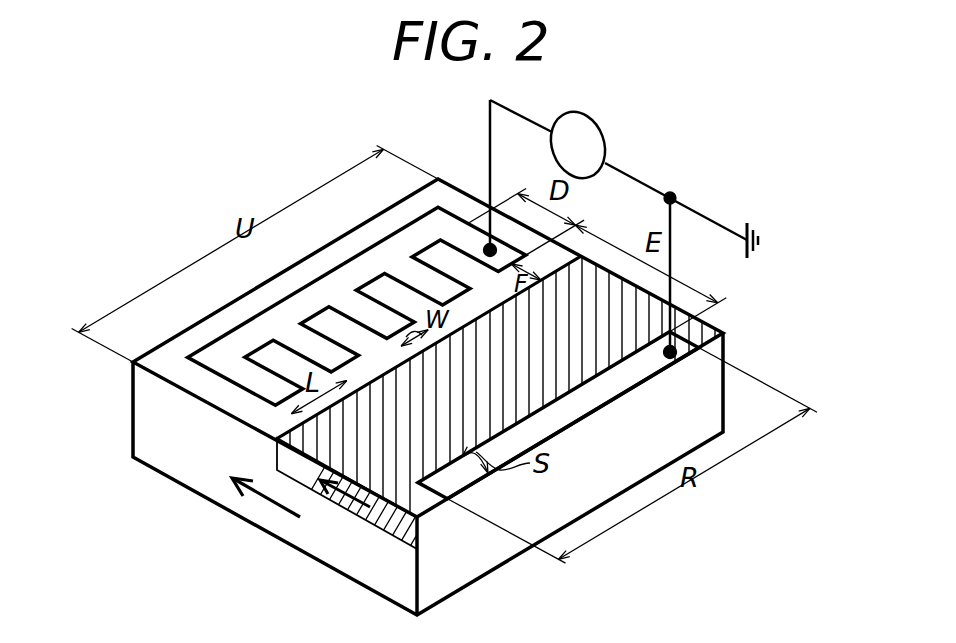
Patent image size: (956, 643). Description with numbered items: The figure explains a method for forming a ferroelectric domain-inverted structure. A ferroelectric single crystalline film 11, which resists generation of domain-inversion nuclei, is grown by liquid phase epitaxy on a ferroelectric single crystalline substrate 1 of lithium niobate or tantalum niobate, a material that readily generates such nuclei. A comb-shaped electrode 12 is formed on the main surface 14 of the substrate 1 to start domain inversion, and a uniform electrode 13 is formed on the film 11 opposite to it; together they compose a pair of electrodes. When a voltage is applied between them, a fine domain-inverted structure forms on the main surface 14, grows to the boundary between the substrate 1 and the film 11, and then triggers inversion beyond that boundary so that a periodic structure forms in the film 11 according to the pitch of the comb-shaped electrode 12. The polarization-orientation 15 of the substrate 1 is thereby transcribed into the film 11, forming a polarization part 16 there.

The ferroelectric single crystalline substrate 1 is at (243, 507).
The ferroelectric single crystalline film 11 is at (333, 438).
The comb-shaped electrode 12 is at (233, 342).
The uniform electrode 13 is at (620, 382).
The main surface 14 is at (468, 212).
The polarization-orientation 15 is at (276, 507).
The polarization part 16 is at (340, 512).